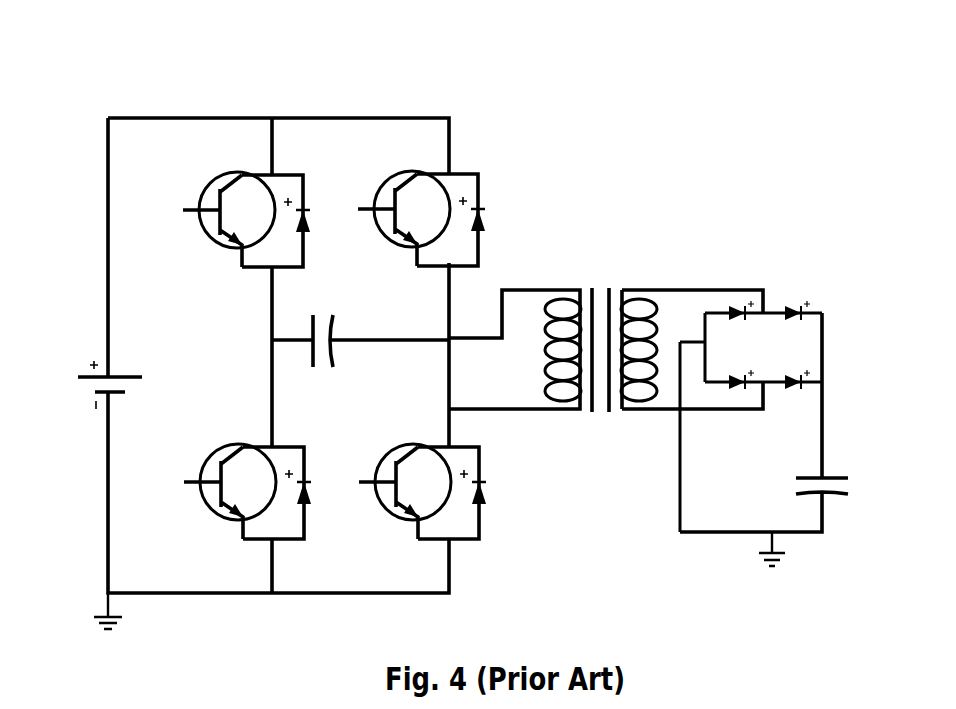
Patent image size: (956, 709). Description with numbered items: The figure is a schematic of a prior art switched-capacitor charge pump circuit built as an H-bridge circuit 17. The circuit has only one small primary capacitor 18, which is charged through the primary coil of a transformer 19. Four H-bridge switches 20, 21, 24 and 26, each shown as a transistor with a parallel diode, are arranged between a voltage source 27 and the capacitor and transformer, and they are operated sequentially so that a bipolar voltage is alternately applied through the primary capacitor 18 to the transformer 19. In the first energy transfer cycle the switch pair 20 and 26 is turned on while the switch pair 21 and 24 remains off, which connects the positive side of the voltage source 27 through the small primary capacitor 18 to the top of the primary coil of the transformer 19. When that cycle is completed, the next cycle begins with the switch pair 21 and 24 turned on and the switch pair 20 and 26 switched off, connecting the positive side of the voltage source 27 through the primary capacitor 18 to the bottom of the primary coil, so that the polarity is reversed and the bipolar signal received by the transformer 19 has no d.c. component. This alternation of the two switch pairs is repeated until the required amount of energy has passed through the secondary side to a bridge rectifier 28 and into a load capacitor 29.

The H-bridge circuit 17 is at (563, 135).
The primary capacitor 18 is at (343, 355).
The transformer 19 is at (598, 280).
The H-bridge switch 20 is at (198, 182).
The H-bridge switch 21 is at (372, 193).
The H-bridge switch 24 is at (212, 517).
The H-bridge switch 26 is at (400, 527).
The voltage source 27 is at (84, 370).
The bridge rectifier 28 is at (751, 416).
The load capacitor 29 is at (808, 465).